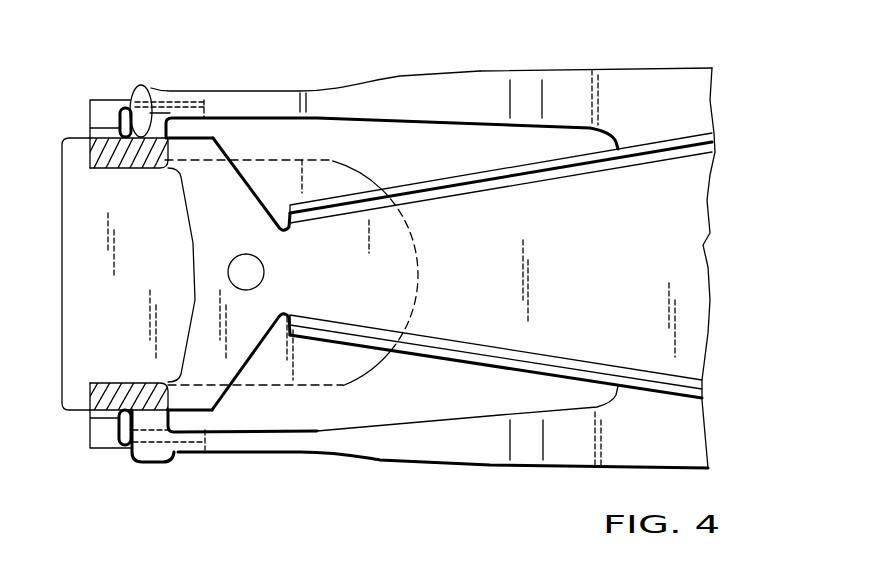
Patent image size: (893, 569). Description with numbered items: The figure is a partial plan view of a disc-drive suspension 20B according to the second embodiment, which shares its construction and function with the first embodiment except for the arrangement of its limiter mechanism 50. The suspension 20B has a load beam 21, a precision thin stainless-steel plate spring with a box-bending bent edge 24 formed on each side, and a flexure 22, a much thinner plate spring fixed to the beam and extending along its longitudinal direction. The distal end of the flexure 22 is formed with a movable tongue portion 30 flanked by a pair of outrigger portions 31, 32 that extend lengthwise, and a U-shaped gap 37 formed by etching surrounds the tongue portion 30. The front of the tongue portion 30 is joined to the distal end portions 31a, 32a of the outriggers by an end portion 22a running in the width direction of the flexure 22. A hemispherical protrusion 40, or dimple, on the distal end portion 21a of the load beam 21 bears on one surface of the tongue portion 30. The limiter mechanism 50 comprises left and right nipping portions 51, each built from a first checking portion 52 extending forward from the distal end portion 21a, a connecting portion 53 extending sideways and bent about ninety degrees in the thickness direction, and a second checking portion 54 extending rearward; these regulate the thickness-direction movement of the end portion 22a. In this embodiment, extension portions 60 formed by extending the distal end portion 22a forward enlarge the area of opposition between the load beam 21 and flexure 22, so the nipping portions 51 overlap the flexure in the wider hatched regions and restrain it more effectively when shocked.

The suspension 20B is at (737, 96).
The load beam 21 is at (683, 258).
The distal end portion of the load beam 21a is at (255, 361).
The flexure 22 is at (697, 67).
The end portion of the flexure 22a is at (118, 112).
The bent edge 24 is at (648, 143).
The tongue portion 30 is at (373, 183).
The outrigger portion 31 is at (407, 91).
The distal end portion of the outrigger portion 31a is at (180, 90).
The outrigger portion 32 is at (405, 463).
The distal end portion of the outrigger portion 32a is at (180, 453).
The gap 37 is at (503, 385).
The protrusion 40 is at (262, 272).
The limiter mechanism 50 is at (97, 82).
The nipping portion 51 is at (88, 160).
The first checking portion 52 is at (134, 88).
The connecting portion 53 is at (90, 123).
The second checking portion 54 is at (198, 90).
The extension portion 60 is at (122, 168).